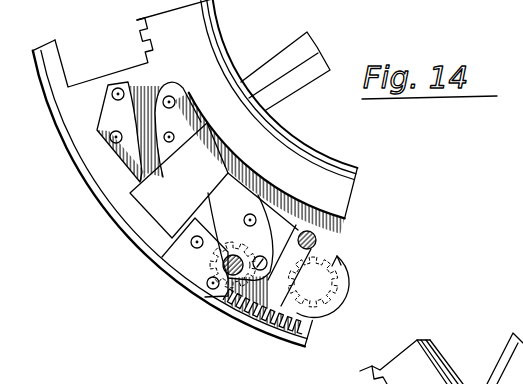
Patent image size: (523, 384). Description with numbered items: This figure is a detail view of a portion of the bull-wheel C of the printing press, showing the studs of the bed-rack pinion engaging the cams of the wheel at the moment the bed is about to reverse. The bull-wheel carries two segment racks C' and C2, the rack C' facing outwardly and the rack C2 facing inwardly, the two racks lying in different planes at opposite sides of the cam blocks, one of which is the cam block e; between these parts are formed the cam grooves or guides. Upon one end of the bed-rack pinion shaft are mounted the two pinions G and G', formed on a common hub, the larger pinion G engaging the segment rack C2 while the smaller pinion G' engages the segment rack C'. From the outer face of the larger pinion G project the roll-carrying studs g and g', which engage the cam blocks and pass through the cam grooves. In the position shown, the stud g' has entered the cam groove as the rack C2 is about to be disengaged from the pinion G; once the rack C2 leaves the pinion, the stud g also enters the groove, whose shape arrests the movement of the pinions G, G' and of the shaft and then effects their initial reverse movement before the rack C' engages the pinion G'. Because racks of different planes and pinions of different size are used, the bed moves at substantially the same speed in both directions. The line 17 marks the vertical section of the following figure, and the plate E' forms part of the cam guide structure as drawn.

The bull-wheel C is at (195, 173).
The segment rack C' is at (104, 52).
The segment rack C2 is at (312, 338).
The pawl plate E' is at (205, 211).
The cam block e is at (195, 257).
The roll-carrying stud g is at (334, 265).
The roll-carrying stud g' is at (209, 269).
The pinion G is at (340, 282).
The pinion G' is at (361, 286).
The section line 17 is at (230, 345).